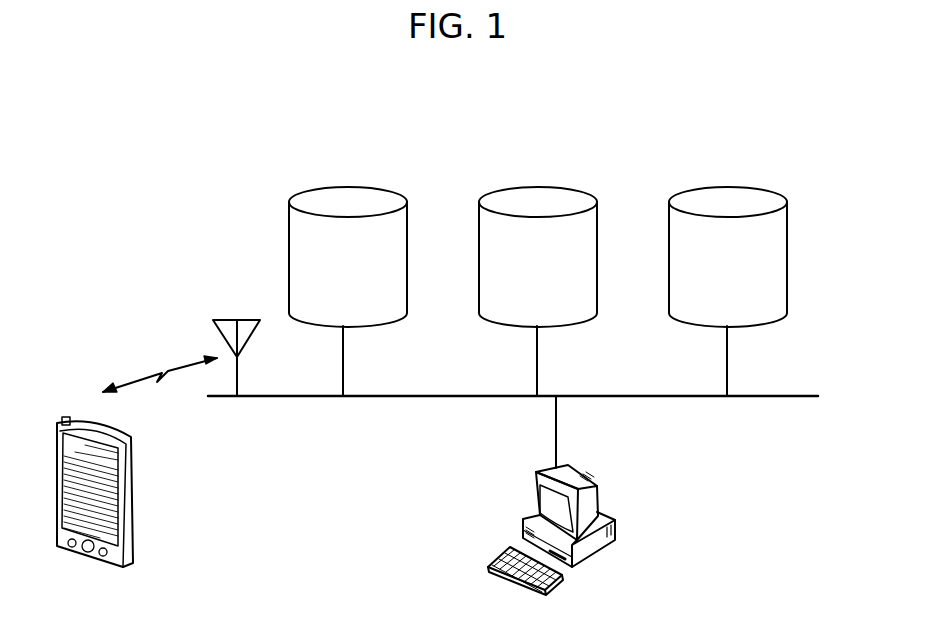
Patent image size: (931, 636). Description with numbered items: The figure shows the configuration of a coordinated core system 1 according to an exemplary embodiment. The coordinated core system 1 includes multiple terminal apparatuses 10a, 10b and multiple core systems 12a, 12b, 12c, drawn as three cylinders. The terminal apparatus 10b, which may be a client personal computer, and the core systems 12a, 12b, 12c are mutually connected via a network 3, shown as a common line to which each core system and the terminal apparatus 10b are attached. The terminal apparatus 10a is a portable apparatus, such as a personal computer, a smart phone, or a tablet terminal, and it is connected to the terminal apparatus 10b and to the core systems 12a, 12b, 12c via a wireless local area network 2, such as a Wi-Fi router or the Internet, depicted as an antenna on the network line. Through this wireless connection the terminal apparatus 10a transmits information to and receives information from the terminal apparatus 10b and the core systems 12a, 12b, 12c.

The coordinated core system 1 is at (236, 131).
The wireless local area network (LAN) 2 is at (229, 320).
The network 3 is at (813, 392).
The terminal apparatus 10a is at (133, 489).
The terminal apparatus 10b is at (598, 488).
The core system 12a is at (365, 187).
The core system 12b is at (560, 187).
The core system 12c is at (750, 187).